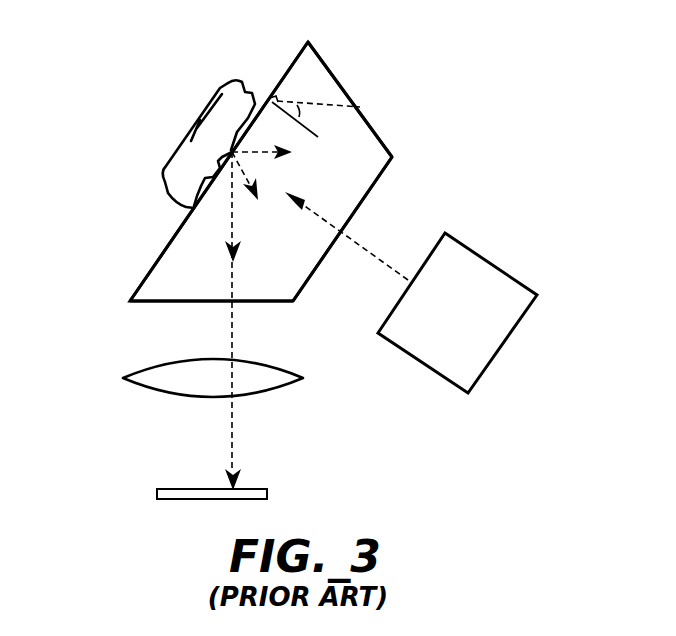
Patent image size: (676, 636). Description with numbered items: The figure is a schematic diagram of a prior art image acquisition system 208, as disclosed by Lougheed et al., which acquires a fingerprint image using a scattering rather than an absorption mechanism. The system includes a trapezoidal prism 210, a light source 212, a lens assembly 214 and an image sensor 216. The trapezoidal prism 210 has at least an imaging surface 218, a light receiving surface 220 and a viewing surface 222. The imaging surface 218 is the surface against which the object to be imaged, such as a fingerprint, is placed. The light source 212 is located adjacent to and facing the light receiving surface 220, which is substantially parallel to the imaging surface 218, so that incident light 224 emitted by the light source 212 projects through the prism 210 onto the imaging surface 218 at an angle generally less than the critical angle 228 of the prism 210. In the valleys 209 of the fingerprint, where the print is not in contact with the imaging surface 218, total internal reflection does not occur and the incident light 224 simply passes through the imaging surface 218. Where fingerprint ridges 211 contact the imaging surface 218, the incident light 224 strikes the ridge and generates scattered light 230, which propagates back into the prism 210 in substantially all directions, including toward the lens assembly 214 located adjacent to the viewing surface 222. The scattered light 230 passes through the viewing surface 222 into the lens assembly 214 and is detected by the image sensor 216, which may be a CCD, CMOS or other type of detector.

The prior art image acquisition system 208 is at (404, 49).
The valleys 209 is at (220, 153).
The trapezoidal prism 210 is at (309, 68).
The fingerprint ridges 211 is at (232, 152).
The light source 212 is at (455, 238).
The lens assembly 214 is at (145, 385).
The image sensor 216 is at (167, 487).
The imaging surface 218 is at (160, 257).
The light receiving surface 220 is at (386, 168).
The viewing surface 222 is at (158, 303).
The incident light 224 is at (363, 250).
The critical angle 228 is at (300, 110).
The scattered light 230 is at (243, 167).